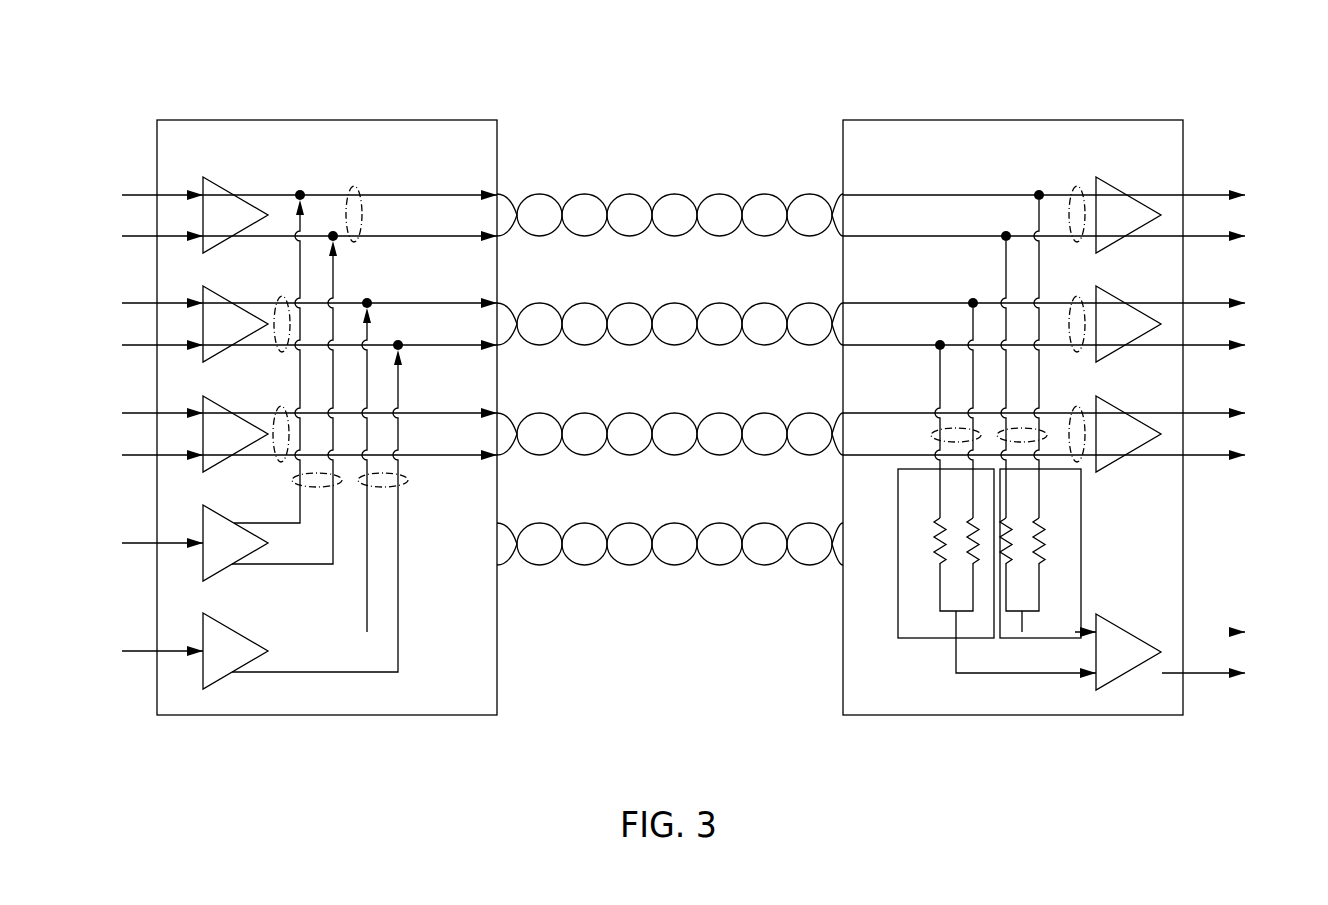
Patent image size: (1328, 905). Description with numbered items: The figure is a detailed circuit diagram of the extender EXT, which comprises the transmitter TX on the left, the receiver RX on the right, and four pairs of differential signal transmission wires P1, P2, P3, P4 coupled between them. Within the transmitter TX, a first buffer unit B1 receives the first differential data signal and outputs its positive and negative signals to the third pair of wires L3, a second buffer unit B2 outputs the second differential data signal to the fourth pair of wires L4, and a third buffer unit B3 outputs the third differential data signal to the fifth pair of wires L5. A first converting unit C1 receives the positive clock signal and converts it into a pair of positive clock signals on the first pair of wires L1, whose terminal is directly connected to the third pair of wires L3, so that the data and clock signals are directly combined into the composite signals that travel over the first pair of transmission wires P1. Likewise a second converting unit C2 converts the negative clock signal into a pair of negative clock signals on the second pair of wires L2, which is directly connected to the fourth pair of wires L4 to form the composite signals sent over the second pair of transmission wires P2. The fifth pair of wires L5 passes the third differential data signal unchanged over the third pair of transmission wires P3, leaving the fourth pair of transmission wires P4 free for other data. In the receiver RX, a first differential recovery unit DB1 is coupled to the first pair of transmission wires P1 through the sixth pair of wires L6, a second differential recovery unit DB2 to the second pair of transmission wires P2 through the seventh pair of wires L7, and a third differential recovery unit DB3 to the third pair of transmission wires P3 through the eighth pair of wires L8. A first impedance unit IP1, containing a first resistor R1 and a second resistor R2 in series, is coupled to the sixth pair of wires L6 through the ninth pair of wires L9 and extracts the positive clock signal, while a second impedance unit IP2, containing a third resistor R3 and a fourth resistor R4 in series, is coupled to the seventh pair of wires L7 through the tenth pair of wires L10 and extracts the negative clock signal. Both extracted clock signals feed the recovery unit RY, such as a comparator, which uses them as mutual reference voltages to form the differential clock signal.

The extender EXT is at (160, 73).
The transmitter TX is at (193, 153).
The receiver RX is at (1172, 152).
The first buffer unit B1 is at (235, 215).
The second buffer unit B2 is at (236, 340).
The third buffer unit B3 is at (236, 447).
The first converting unit C1 is at (236, 558).
The second converting unit C2 is at (236, 667).
The first pair of wires L1 is at (317, 494).
The second pair of wires L2 is at (383, 494).
The third pair of wires L3 is at (350, 201).
The fourth pair of wires L4 is at (277, 311).
The fifth pair of wires L5 is at (277, 420).
The sixth pair of wires L6 is at (1075, 201).
The seventh pair of wires L7 is at (1075, 311).
The eighth pair of wires L8 is at (1075, 420).
The ninth pair of wires L9 is at (1020, 428).
The tenth pair of wires L10 is at (953, 427).
The first pair of differential data signal transmission wire P1 is at (722, 194).
The second pair of differential data signal transmission wire P2 is at (722, 303).
The third pair of differential data signal transmission wire P3 is at (722, 413).
The fourth pair of differential signal transmission wire P4 is at (722, 523).
The first differential recovery unit DB1 is at (1128, 215).
The second differential recovery unit DB2 is at (1137, 340).
The third differential recovery unit DB3 is at (1137, 448).
The recovery unit RY is at (1130, 665).
The first impedance unit IP1 is at (1040, 553).
The second impedance unit IP2 is at (937, 498).
The first resistor R1 is at (1048, 541).
The second resistor R2 is at (1014, 541).
The third resistor R3 is at (981, 541).
The fourth resistor R4 is at (948, 541).